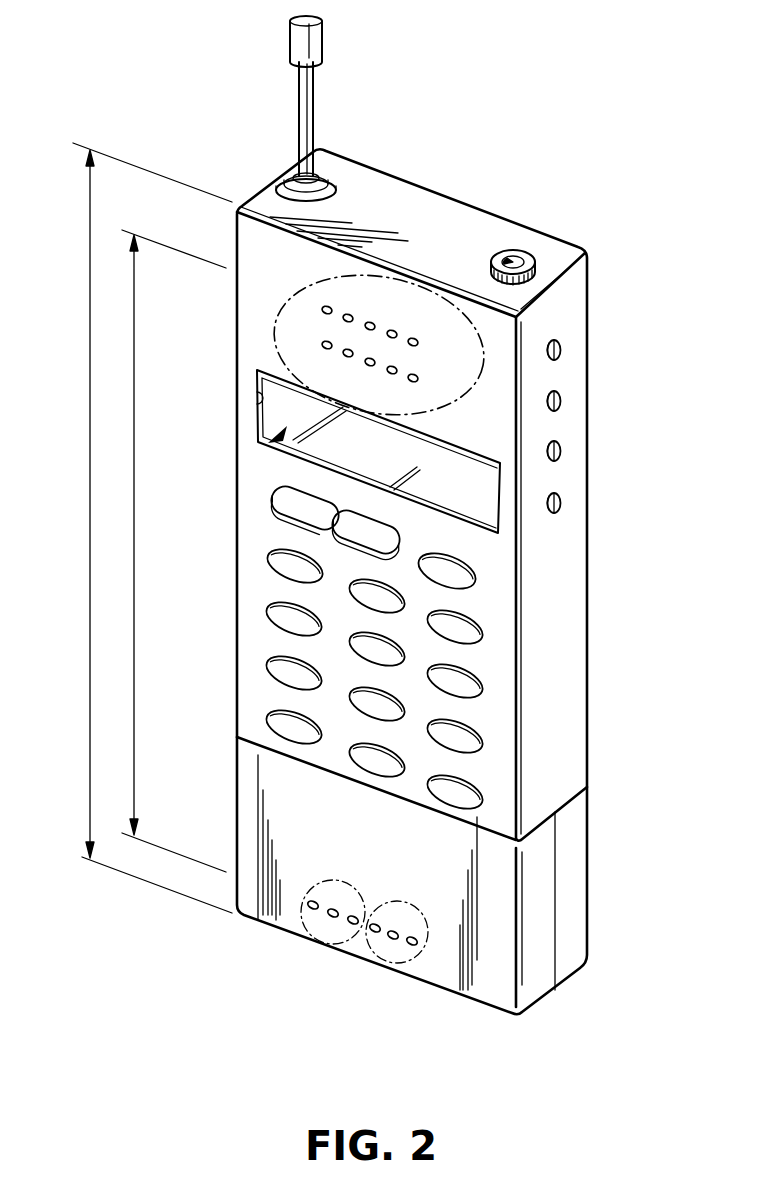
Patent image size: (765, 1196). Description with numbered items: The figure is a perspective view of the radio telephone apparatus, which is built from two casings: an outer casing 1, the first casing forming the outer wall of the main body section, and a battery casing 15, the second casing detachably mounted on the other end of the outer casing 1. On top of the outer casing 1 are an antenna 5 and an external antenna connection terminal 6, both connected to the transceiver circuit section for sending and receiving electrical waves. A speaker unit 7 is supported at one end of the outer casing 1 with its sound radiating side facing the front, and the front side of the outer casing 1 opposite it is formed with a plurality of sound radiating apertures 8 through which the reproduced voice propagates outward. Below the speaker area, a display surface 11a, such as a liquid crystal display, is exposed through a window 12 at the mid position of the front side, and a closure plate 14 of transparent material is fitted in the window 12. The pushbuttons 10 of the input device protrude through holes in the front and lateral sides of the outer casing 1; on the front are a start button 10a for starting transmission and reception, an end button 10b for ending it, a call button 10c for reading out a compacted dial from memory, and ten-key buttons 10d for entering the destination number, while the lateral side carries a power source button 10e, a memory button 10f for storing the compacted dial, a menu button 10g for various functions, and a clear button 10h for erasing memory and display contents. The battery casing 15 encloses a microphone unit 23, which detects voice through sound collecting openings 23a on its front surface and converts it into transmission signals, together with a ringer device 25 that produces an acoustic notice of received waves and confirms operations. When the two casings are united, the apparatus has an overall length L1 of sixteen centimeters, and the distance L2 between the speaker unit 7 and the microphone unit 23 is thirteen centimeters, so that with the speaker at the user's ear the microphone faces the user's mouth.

The outer casing 1 is at (573, 652).
The antenna 5 is at (308, 100).
The external antenna connection terminal 6 is at (515, 257).
The speaker unit 7 is at (386, 290).
The sound radiating apertures 8 is at (396, 332).
The pushbuttons 10 is at (268, 628).
The start button 10a is at (273, 512).
The end button 10b is at (340, 541).
The call button 10c is at (470, 573).
The ten-key button 10d is at (272, 674).
The power source button 10e is at (561, 349).
The memory button 10f is at (561, 401).
The menu button 10g is at (562, 451).
The clear button 10h is at (562, 503).
The display surface 11a is at (265, 442).
The window 12 is at (255, 410).
The closure plate 14 is at (256, 395).
The battery casing 15 is at (580, 876).
The microphone unit 23 is at (395, 960).
The sound collecting openings 23a is at (375, 933).
The ringer device 25 is at (308, 927).
The overall length L1 is at (151, 528).
The distance between speaker unit and microphone unit L2 is at (170, 551).